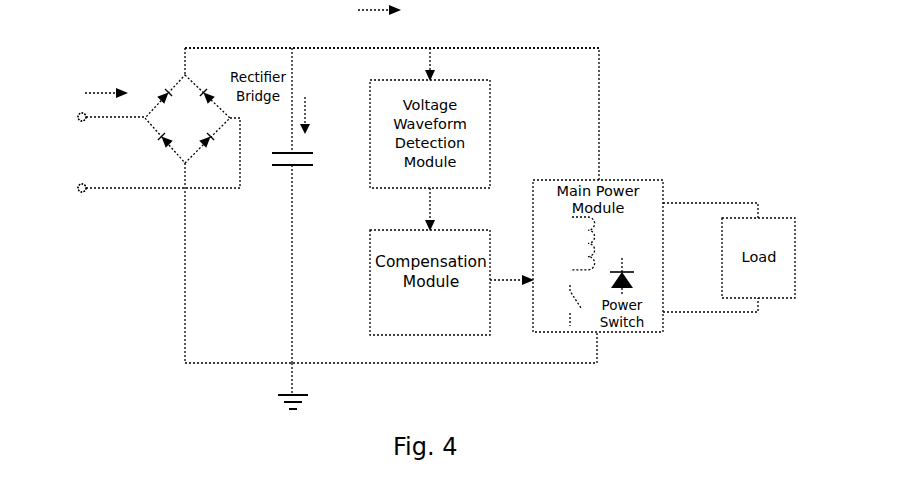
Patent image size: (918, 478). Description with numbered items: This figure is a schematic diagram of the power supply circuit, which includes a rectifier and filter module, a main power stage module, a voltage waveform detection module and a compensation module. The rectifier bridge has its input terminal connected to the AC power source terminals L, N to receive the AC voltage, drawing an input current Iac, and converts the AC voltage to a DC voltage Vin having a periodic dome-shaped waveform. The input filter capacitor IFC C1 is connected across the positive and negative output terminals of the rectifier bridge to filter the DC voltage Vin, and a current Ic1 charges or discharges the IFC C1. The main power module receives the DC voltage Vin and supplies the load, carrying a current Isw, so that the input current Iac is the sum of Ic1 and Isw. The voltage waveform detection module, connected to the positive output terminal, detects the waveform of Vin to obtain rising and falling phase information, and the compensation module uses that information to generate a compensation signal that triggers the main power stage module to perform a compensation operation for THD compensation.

The input filter capacitor C1 is at (309, 205).
The input filter capacitor IFC is at (304, 171).
The current for charging or discharging the IFC Ic1 is at (323, 115).
The DC voltage Vin is at (392, 33).
The current through the main power stage Isw is at (379, 23).
The input current Iac is at (106, 80).
The AC power source line terminal L is at (69, 123).
The AC power source neutral terminal N is at (68, 189).